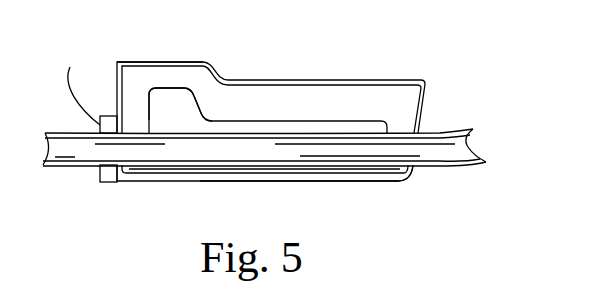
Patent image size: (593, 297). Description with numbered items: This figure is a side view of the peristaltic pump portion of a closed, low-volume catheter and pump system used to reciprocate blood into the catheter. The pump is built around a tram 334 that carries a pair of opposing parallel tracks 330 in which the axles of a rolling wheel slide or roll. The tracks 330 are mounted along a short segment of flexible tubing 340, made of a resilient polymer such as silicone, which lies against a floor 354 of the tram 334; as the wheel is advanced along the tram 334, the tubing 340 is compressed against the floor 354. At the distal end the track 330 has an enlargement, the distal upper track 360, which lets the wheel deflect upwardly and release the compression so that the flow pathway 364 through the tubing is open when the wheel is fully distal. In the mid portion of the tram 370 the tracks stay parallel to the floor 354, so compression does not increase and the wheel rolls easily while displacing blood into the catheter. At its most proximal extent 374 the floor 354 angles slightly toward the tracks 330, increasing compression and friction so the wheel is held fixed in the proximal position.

The parallel tracks 330 is at (312, 123).
The tram 334 is at (428, 72).
The flexible tubing 340 is at (203, 152).
The floor 354 is at (272, 182).
The distal upper track 360 is at (168, 97).
The flow pathway 364 is at (465, 150).
The mid portion of the tram 370 is at (247, 123).
The most proximal extent 374 is at (402, 181).